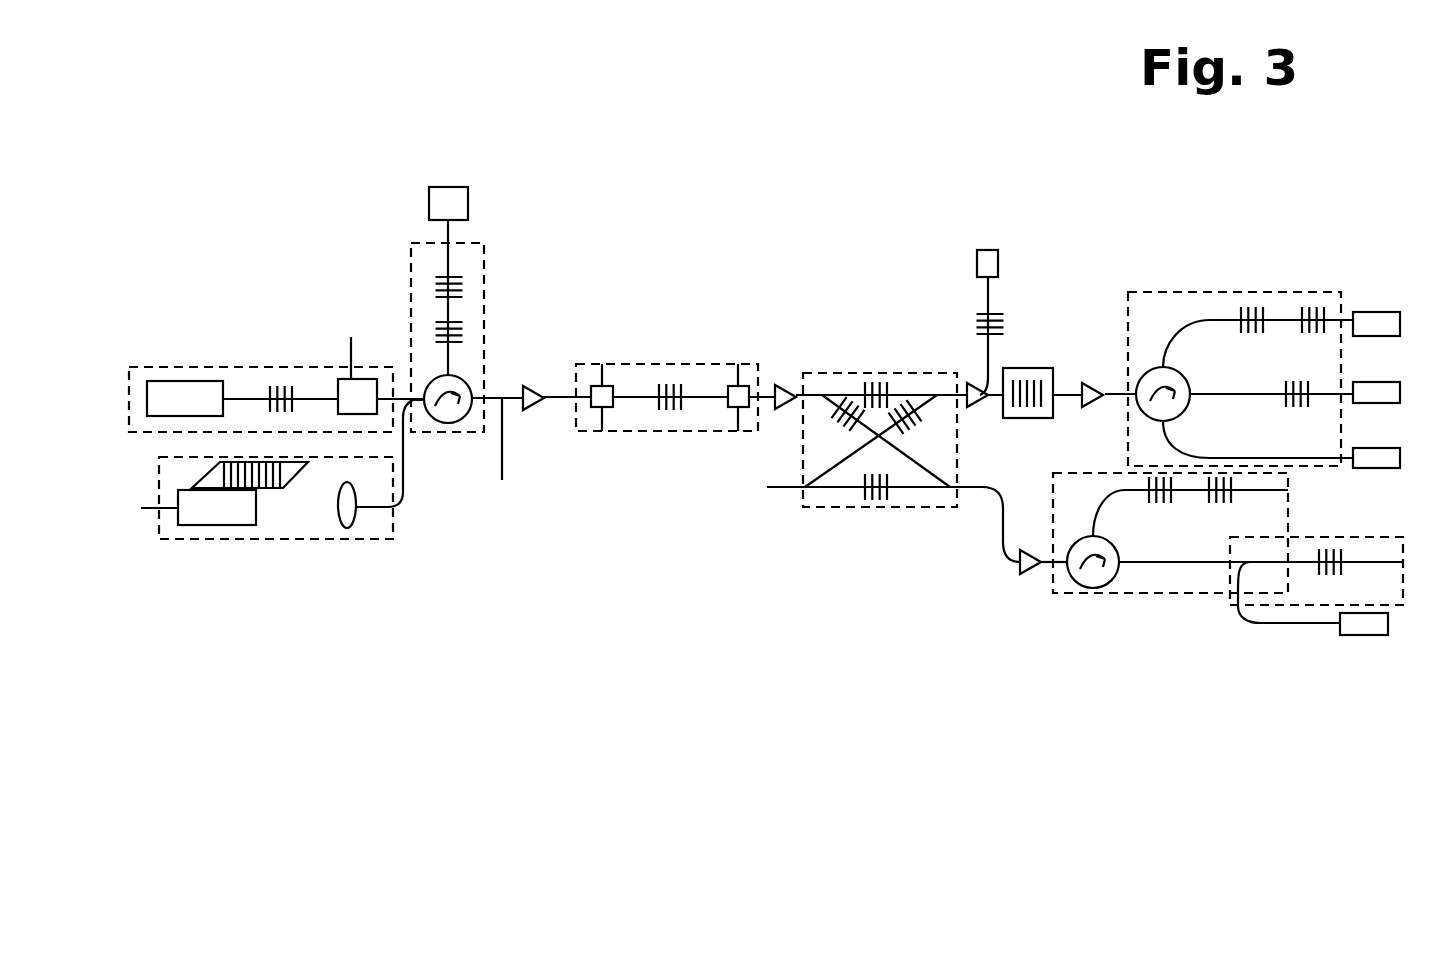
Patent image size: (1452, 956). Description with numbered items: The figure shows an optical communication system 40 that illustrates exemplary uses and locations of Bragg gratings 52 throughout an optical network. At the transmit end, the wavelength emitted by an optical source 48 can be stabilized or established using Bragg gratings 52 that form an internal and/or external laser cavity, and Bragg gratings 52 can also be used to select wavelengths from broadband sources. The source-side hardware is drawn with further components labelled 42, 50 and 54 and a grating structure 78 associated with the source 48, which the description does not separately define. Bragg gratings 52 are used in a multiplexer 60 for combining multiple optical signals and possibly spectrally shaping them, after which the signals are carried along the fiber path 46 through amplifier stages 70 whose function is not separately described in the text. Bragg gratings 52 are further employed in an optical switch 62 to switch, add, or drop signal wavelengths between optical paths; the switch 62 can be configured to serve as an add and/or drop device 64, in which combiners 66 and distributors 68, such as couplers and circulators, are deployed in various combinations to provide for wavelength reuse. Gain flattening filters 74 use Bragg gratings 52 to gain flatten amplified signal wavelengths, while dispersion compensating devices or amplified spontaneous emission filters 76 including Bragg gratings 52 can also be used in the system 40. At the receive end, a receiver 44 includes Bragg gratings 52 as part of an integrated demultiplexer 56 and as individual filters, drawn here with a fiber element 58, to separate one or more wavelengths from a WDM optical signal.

The optical communication system 40 is at (840, 142).
The light source 42 is at (449, 183).
The receiver 44 is at (1403, 448).
The optical fiber 46 is at (482, 457).
The optical source 48 is at (178, 493).
The lens 50 is at (353, 527).
The Bragg grating 52 is at (464, 332).
The modulator 54 is at (370, 378).
The integrated demultiplexer 56 is at (1153, 292).
The fiber loop 58 is at (1230, 605).
The multiplexer 60 is at (409, 263).
The optical switch 62 is at (890, 508).
The add and/or drop device 64 is at (631, 429).
The combiner 66 is at (610, 387).
The distributor 68 is at (730, 387).
The optical amplifier 70 is at (530, 409).
The gain flattening filter 74 is at (1040, 368).
The ASE filter 76 is at (1072, 595).
The grating array 78 is at (215, 467).